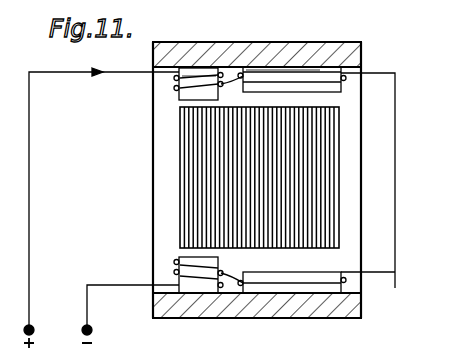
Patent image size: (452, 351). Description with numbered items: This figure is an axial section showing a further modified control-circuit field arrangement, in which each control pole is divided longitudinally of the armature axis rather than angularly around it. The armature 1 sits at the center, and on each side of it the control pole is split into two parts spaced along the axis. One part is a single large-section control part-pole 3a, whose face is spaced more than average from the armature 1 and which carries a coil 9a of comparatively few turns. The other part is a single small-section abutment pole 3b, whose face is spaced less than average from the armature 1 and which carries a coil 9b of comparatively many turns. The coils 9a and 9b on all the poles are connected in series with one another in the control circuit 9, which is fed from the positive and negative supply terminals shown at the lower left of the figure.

The armature 1 is at (339, 237).
The control part-pole 3a is at (334, 87).
The abutment pole 3b is at (180, 102).
The control circuit 9 is at (85, 295).
The coil 9a is at (279, 72).
The coil 9b is at (203, 78).